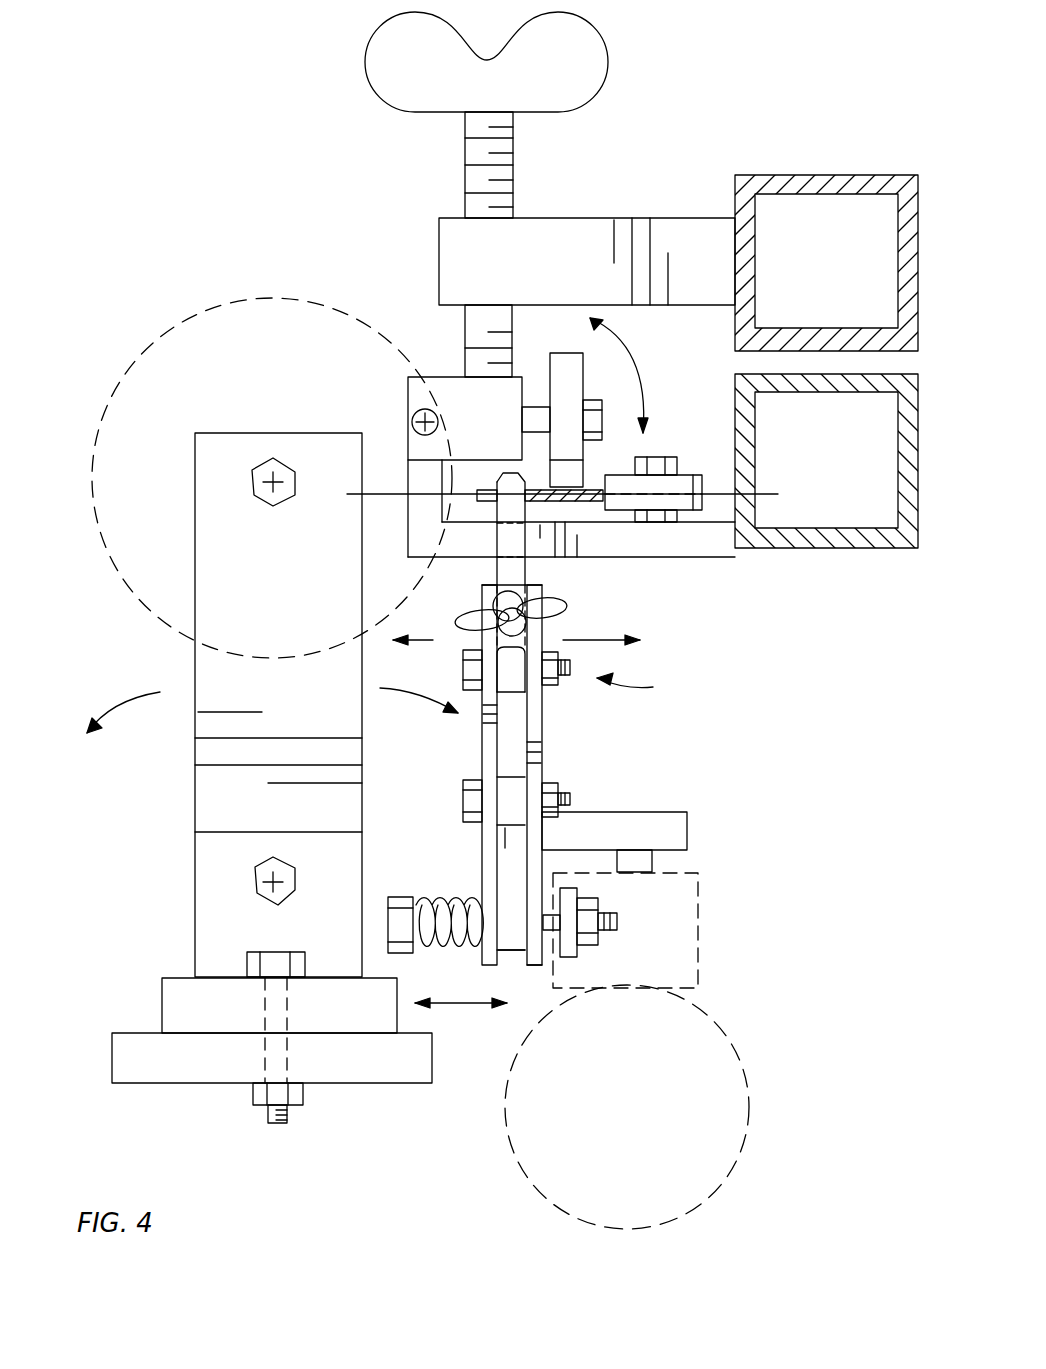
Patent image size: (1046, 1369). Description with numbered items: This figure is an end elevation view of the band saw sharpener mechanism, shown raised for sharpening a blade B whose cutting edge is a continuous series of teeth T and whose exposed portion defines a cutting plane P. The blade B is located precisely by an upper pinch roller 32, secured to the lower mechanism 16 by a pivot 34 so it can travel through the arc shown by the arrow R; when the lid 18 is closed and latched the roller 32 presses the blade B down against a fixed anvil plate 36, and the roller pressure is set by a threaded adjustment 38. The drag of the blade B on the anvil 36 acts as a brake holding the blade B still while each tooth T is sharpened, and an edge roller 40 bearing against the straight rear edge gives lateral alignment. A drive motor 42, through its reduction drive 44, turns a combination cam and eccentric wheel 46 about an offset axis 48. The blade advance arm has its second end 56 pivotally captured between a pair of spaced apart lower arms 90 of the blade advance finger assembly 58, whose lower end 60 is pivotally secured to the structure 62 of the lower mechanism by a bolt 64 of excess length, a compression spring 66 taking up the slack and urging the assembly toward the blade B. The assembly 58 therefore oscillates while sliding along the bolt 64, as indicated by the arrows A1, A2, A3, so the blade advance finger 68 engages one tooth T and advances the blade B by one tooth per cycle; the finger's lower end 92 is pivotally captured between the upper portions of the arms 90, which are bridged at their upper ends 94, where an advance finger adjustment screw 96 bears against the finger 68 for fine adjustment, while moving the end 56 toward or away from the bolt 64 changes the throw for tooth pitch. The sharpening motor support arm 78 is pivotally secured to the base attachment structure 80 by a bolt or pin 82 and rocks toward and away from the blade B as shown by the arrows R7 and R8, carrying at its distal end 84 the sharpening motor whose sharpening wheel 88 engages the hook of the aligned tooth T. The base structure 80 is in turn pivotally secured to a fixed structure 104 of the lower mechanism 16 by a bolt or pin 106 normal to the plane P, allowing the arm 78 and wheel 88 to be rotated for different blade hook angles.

The lower mechanism 16 is at (832, 548).
The lid 18 is at (808, 174).
The upper pinch roller 32 is at (563, 353).
The pivot 34 is at (418, 410).
The fixed anvil plate 36 is at (573, 515).
The threaded adjustment 38 is at (465, 165).
The edge roller 40 is at (690, 473).
The drive motor 42 is at (745, 1033).
The reduction drive 44 is at (700, 918).
The combination cam and eccentric wheel 46 is at (687, 822).
The offset axis 48 is at (652, 865).
The second end of blade advance arm 56 is at (508, 775).
The blade advance finger assembly 58 is at (650, 688).
The lower end of finger assembly 60 is at (537, 967).
The structure of lower mechanism 62 is at (513, 952).
The bolt 64 is at (402, 897).
The compression spring 66 is at (458, 907).
The blade advance finger 68 is at (510, 470).
The sharpening motor support arm 78 is at (265, 708).
The base attachment structure 80 is at (195, 945).
The bolt or pin 82 is at (253, 878).
The distal end of sharpening motor support arm 84 is at (285, 433).
The sharpening wheel 88 is at (223, 298).
The lower arms 90 is at (497, 727).
The lower end of blade advance finger 92 is at (505, 668).
The bridged connection area 94 is at (482, 588).
The advance finger adjustment screw 96 is at (537, 600).
The fixed structure 104 is at (203, 1085).
The bolt or pin 106 is at (283, 952).
The cutting plane P is at (395, 494).
The teeth T is at (488, 486).
The blade B is at (597, 486).
The arrow R is at (633, 363).
The reciprocation motion arrow R7 is at (127, 718).
The reciprocation motion arrow R8 is at (418, 705).
The arrow A1 is at (467, 1007).
The arrow A2 is at (428, 640).
The arrow A3 is at (593, 640).